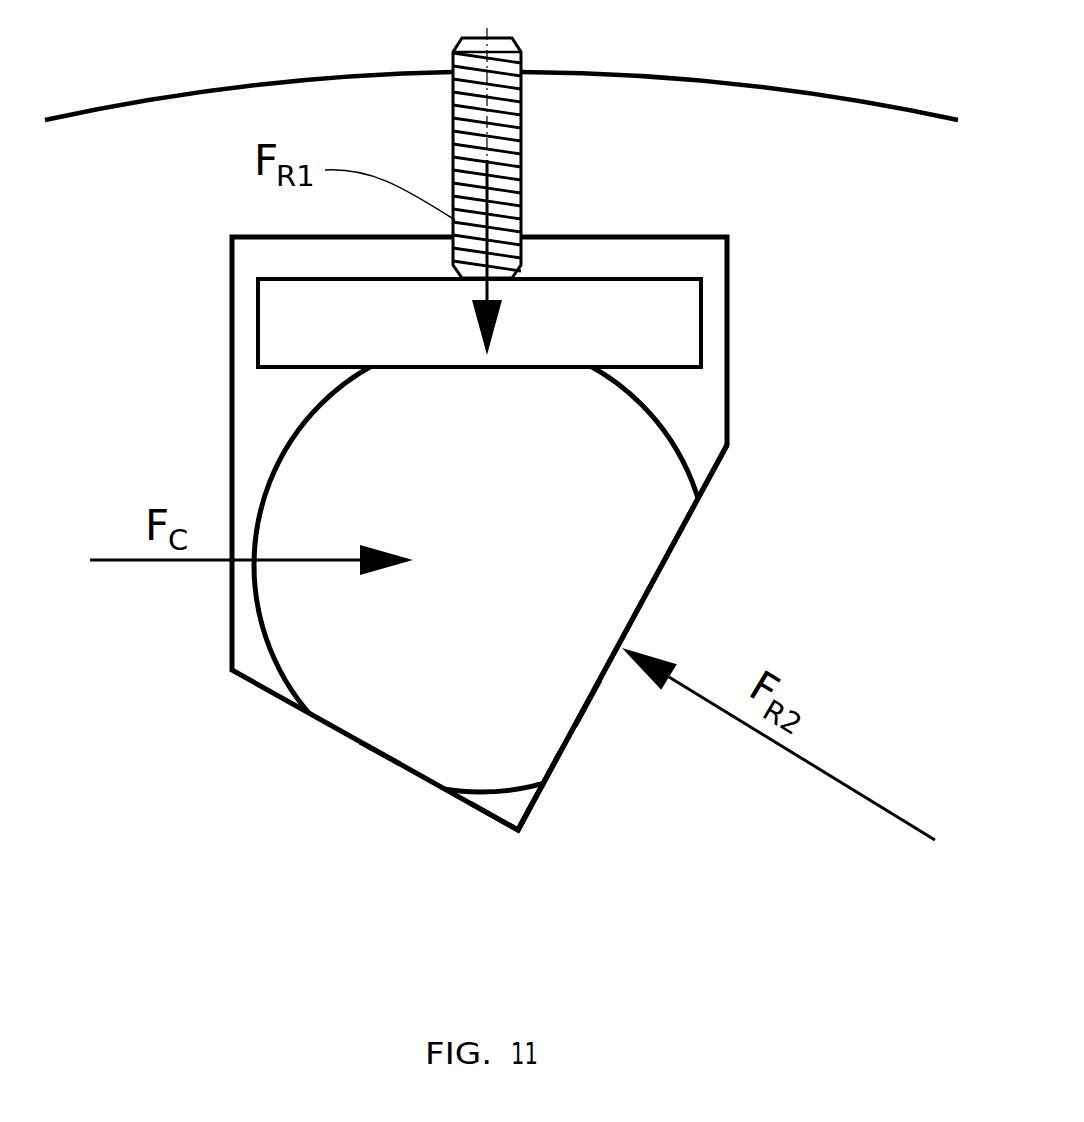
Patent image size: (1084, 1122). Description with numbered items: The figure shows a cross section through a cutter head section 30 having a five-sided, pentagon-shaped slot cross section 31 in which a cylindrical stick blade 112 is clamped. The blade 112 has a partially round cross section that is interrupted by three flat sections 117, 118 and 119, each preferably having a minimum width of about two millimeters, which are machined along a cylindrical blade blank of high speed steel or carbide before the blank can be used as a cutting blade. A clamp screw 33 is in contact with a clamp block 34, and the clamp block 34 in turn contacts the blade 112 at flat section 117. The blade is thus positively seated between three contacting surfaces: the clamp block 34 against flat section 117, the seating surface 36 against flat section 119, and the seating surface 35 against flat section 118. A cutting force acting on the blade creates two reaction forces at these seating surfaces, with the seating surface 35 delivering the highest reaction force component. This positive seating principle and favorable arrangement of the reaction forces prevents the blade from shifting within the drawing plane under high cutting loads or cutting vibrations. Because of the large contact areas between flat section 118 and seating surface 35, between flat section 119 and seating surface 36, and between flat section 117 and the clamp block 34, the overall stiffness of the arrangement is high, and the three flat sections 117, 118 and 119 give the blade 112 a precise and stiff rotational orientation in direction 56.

The cutter head section 30 is at (715, 80).
The five-sided slot cross section 31 is at (685, 395).
The clamp screw 33 is at (523, 172).
The clamp block 34 is at (637, 309).
The seating surface 35 is at (535, 808).
The seating surface 36 is at (487, 815).
The rotational orientation direction 56 is at (542, 478).
The stick blade 112 is at (665, 520).
The flat section 117 is at (490, 368).
The flat section 118 is at (583, 700).
The flat section 119 is at (380, 748).